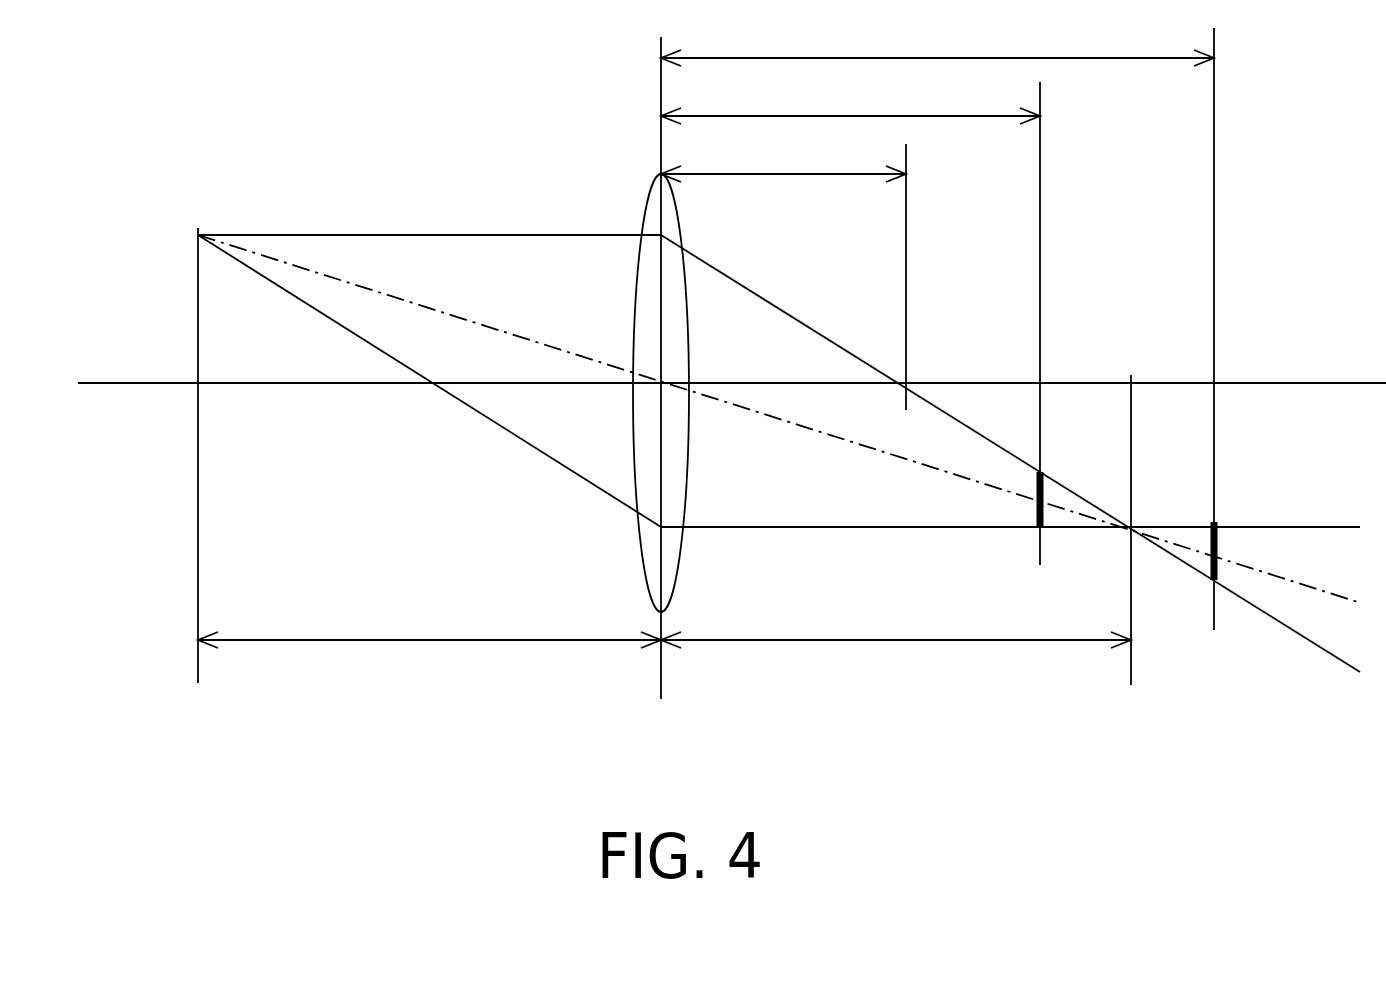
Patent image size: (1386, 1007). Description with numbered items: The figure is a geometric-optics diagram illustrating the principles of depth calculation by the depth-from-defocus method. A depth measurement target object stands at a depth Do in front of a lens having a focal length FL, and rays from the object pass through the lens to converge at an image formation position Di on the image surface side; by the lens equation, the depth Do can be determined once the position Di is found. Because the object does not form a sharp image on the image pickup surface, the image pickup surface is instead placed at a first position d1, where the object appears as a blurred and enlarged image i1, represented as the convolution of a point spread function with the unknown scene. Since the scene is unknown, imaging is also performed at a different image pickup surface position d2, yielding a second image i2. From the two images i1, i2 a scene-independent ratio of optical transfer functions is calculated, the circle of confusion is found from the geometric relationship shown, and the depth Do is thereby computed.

The focal length FL is at (783, 270).
The image pickup surface position d1 is at (850, 317).
The different image pickup surface position d2 is at (937, 321).
The depth Do is at (429, 621).
The image formation position Di is at (896, 621).
The image i1 is at (1011, 459).
The image i2 is at (1248, 524).